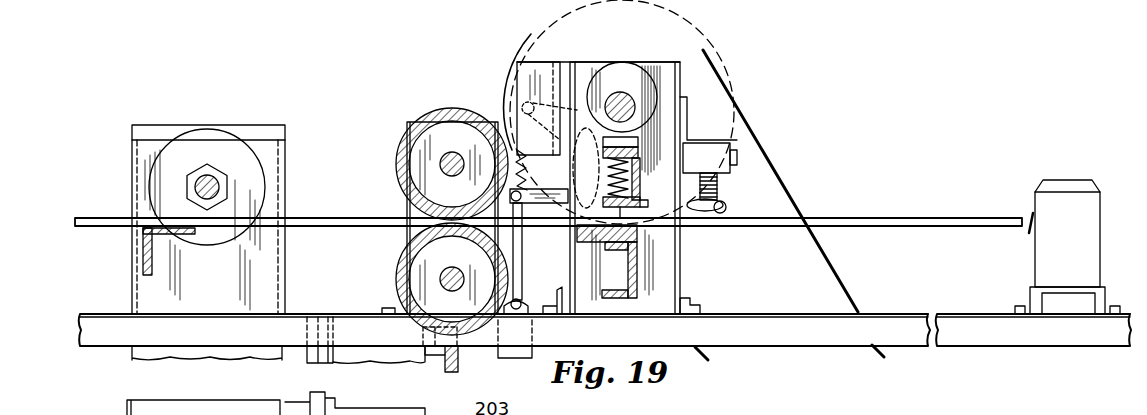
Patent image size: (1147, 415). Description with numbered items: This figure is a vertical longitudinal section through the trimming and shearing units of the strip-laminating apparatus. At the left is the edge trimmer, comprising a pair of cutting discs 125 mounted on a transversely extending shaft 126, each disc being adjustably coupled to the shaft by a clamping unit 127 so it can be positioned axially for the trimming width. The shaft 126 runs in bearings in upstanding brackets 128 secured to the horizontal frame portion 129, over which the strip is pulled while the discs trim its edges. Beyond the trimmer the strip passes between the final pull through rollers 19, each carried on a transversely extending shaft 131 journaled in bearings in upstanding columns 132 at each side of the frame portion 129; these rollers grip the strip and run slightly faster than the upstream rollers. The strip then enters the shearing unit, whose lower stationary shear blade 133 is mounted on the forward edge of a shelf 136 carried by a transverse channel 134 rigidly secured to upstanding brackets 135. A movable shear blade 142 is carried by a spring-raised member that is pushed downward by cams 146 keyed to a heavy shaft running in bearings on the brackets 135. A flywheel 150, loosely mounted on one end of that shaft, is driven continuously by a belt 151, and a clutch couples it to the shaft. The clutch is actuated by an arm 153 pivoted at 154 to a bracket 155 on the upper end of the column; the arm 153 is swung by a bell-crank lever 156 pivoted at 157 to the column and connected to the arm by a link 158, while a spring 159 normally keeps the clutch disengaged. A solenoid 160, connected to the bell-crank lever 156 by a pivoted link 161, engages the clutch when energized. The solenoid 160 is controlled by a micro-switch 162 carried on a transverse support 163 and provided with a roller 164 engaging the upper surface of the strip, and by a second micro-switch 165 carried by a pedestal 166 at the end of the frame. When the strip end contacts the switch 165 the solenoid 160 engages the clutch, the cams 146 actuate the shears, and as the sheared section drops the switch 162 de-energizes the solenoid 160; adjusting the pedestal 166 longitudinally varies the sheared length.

The final pull through rollers 19 is at (428, 118).
The cutting discs 125 is at (212, 137).
The shaft 126 is at (193, 189).
The clamping unit 127 is at (214, 170).
The upstanding brackets 128 is at (143, 243).
The horizontal frame portion 129 is at (148, 262).
The shaft 131 is at (449, 160).
The columns 132 is at (407, 215).
The lower stationary shear blade 133 is at (640, 233).
The transverse channel 134 is at (633, 275).
The upstanding brackets 135 is at (682, 256).
The shelf 136 is at (630, 224).
The shear blade 142 is at (650, 178).
The cams 146 is at (625, 72).
The flywheel 150 is at (700, 63).
The belt 151 is at (745, 108).
The arm 153 is at (547, 96).
The pivot 154 is at (522, 105).
The bracket 155 is at (518, 63).
The bell-crank lever 156 is at (547, 203).
The pivot 157 is at (606, 173).
The link 158 is at (610, 99).
The spring 159 is at (523, 130).
The solenoid 160 is at (515, 333).
The pivoted link 161 is at (522, 268).
The micro-switch 162 is at (713, 192).
The transverse support 163 is at (684, 128).
The roller 164 is at (727, 207).
The second micro-switch 165 is at (1030, 213).
The pedestal 166 is at (1050, 257).